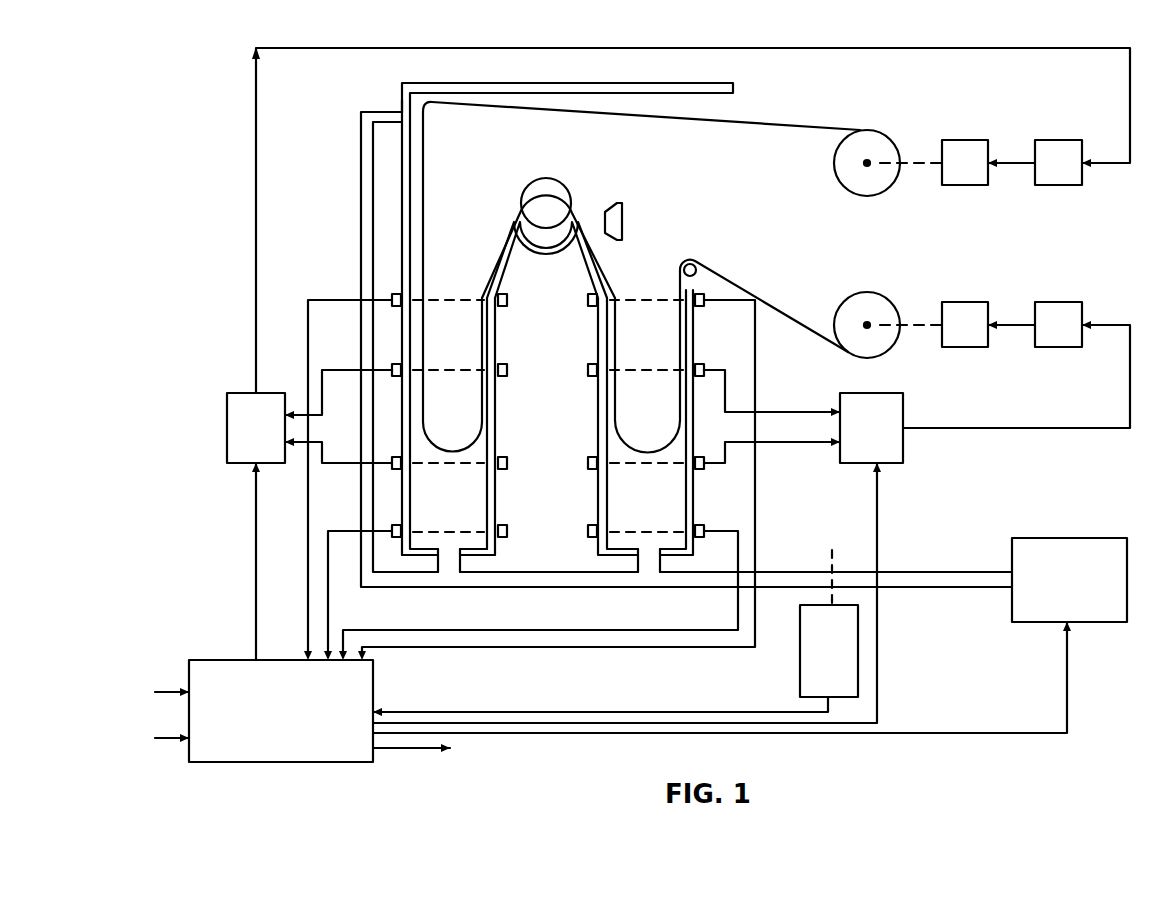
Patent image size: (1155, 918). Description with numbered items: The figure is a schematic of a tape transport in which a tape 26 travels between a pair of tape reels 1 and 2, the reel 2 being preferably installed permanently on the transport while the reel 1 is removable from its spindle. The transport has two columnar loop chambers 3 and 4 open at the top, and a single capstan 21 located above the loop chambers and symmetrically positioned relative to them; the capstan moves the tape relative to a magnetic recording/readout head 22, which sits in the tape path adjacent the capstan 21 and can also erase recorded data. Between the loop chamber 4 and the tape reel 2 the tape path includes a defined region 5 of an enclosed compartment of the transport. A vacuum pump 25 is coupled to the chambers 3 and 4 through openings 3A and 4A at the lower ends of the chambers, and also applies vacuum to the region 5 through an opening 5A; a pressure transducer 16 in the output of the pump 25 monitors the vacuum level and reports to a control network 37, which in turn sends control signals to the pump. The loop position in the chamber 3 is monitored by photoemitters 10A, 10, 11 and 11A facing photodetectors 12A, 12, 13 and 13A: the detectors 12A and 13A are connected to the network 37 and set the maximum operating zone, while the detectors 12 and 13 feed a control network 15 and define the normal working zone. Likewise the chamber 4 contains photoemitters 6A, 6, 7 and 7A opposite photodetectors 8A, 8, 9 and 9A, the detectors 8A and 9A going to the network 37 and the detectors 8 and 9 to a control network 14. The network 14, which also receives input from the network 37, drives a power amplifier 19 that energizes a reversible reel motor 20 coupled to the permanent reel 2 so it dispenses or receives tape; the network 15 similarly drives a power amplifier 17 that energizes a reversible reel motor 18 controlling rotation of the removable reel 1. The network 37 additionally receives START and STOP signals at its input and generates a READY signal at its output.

The tape reel 1 is at (874, 352).
The tape reel 2 is at (878, 193).
The loop chamber 3 is at (653, 504).
The opening 3A is at (648, 564).
The loop chamber 4 is at (455, 504).
The opening 4A is at (446, 564).
The region 5 is at (423, 112).
The opening 5A is at (402, 108).
The photoemitter 6 is at (509, 368).
The photoemitter 6A is at (508, 297).
The photoemitter 7 is at (509, 460).
The photoemitter 7A is at (509, 527).
The photodetector 8 is at (392, 367).
The photodetector 8A is at (392, 297).
The photodetector 9 is at (392, 468).
The photodetector 9A is at (392, 528).
The photoemitter 10 is at (586, 368).
The photoemitter 10A is at (586, 300).
The photoemitter 11 is at (586, 463).
The photoemitter 11A is at (587, 531).
The photodetector 12 is at (697, 364).
The photodetector 12A is at (700, 293).
The photodetector 13 is at (697, 457).
The photodetector 13A is at (697, 524).
The control network 14 is at (227, 414).
The control network 15 is at (906, 412).
The pressure transducer 16 is at (799, 655).
The power amplifier 17 is at (1043, 302).
The reversible reel motor 18 is at (946, 302).
The power amplifier 19 is at (1040, 140).
The reversible reel motor 20 is at (946, 140).
The capstan 21 is at (549, 178).
The magnetic recording/readout head 22 is at (624, 213).
The vacuum pump 25 is at (1050, 538).
The tape 26 is at (766, 122).
The control network 37 is at (290, 762).